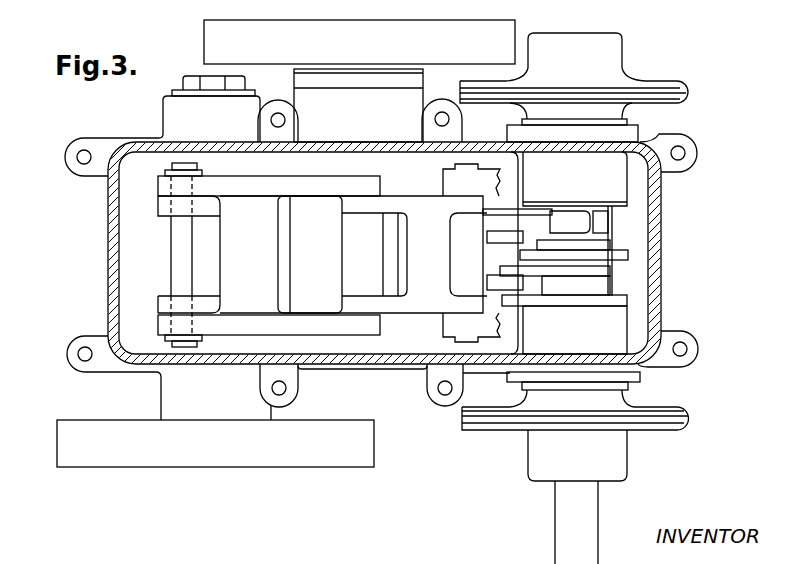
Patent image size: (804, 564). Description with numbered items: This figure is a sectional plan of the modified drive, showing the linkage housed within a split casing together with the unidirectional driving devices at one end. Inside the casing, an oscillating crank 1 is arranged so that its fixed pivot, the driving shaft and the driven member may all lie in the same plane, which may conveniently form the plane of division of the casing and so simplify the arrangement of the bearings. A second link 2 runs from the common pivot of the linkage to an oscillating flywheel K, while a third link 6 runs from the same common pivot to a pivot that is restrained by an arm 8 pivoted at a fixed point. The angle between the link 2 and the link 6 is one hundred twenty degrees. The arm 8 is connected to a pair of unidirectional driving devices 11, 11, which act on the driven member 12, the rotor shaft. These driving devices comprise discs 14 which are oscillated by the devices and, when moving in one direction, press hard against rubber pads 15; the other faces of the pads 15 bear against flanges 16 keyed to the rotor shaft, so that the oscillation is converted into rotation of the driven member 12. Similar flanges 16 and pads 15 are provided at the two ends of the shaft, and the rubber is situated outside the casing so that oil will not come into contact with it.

The oscillating crank 1 is at (160, 203).
The second link 2 is at (303, 184).
The third link 6 is at (322, 254).
The arm 8 is at (452, 182).
The unidirectional driving devices 11 is at (506, 217).
The driven member 12 is at (588, 529).
The discs 14 is at (667, 100).
The rubber pads 15 is at (673, 92).
The flanges 16 is at (645, 80).
The oscillating flywheel K is at (148, 452).